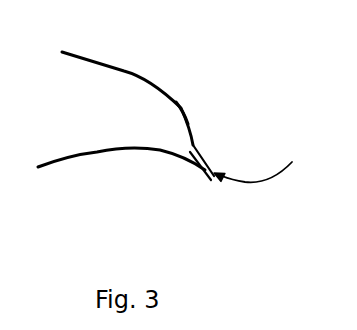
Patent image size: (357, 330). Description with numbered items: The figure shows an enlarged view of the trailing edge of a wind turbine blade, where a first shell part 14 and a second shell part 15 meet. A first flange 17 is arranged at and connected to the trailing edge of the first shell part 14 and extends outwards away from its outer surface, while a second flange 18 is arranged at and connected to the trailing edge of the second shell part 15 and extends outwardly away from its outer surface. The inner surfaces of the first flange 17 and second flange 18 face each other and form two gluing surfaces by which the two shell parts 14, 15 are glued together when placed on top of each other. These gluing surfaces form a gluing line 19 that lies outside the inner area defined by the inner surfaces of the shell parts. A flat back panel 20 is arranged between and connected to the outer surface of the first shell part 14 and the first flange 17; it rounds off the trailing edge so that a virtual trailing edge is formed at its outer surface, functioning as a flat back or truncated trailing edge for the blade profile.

The first shell part 14 is at (124, 71).
The second shell part 15 is at (97, 152).
The first flange 17 is at (208, 165).
The second flange 18 is at (193, 160).
The gluing line 19 is at (269, 163).
The flat back panel 20 is at (182, 108).